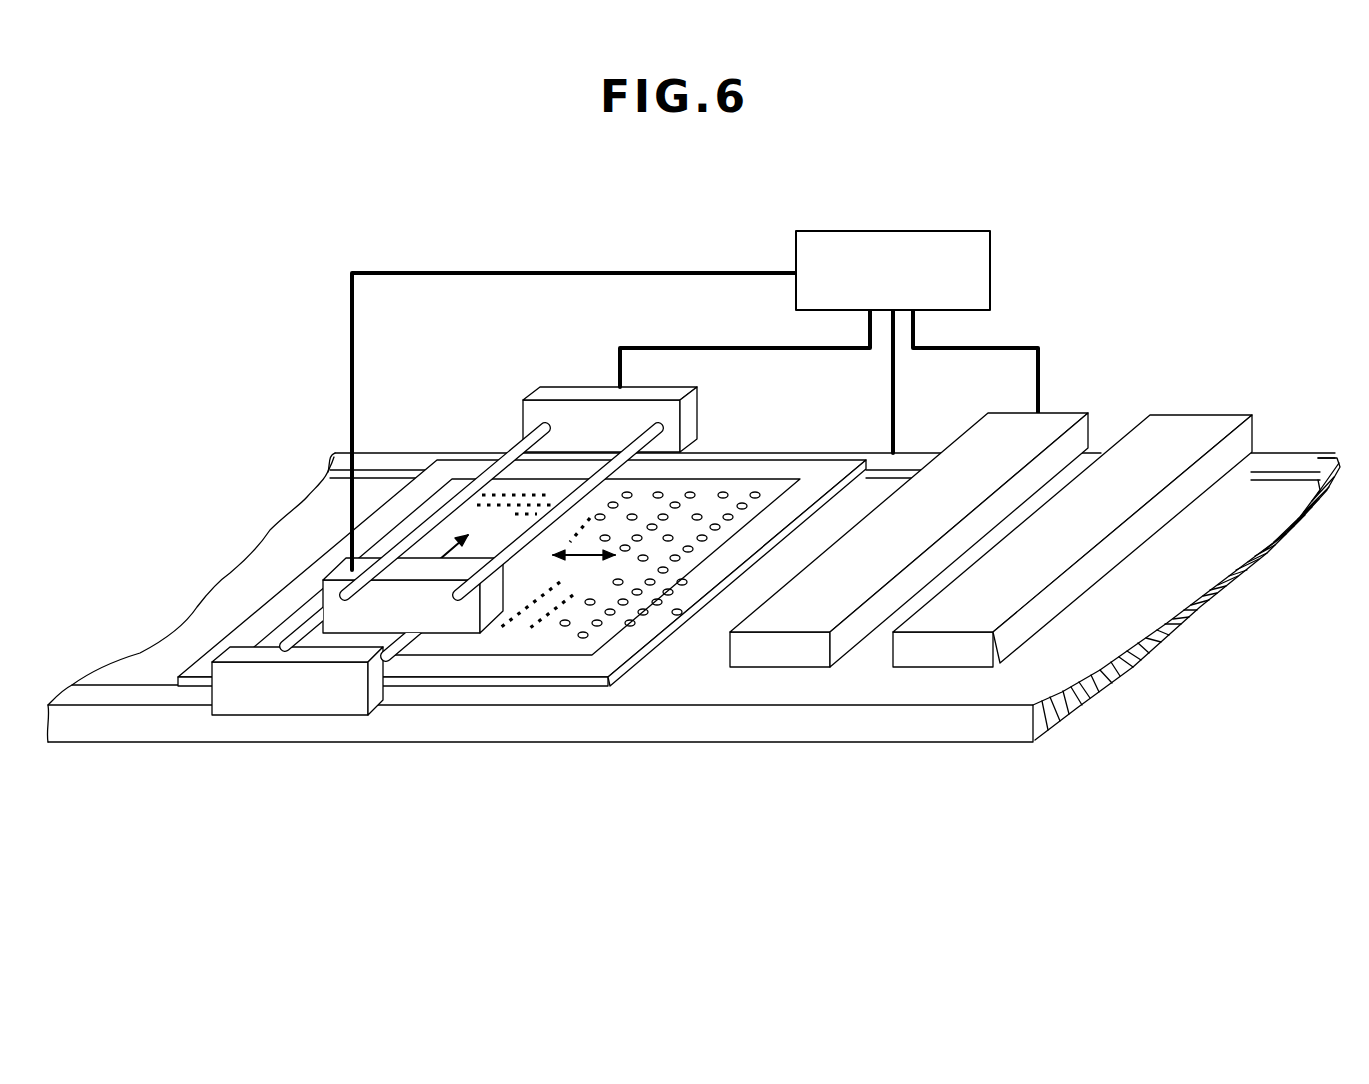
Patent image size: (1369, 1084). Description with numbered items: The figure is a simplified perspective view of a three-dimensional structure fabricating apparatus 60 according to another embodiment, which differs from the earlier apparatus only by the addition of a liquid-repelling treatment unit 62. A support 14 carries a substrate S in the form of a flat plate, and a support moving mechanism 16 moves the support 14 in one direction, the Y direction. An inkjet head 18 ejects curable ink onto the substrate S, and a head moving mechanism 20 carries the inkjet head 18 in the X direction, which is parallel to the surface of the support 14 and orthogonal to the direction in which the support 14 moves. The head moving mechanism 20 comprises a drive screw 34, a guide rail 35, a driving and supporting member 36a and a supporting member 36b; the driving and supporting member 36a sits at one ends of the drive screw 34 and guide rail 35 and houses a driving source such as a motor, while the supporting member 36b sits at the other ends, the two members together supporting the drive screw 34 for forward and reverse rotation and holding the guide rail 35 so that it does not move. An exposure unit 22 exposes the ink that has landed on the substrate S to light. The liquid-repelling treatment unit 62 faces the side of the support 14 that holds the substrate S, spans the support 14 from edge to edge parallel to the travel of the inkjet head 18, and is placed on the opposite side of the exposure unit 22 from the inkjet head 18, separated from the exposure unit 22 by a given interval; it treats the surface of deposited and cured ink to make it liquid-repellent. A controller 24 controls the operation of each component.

The three-dimensional structure fabricating apparatus 60 is at (168, 287).
The controller 24 is at (990, 271).
The head moving mechanism 20 is at (512, 378).
The driving and supporting member 36a is at (567, 387).
The supporting member 36b is at (240, 707).
The support 14 is at (423, 495).
The drive screw 34 is at (484, 477).
The guide rail 35 is at (622, 466).
The inkjet head 18 is at (338, 574).
The exposure unit 22 is at (1060, 412).
The liquid-repelling treatment unit 62 is at (1208, 413).
The support moving mechanism 16 is at (355, 733).
The substrate S is at (548, 645).